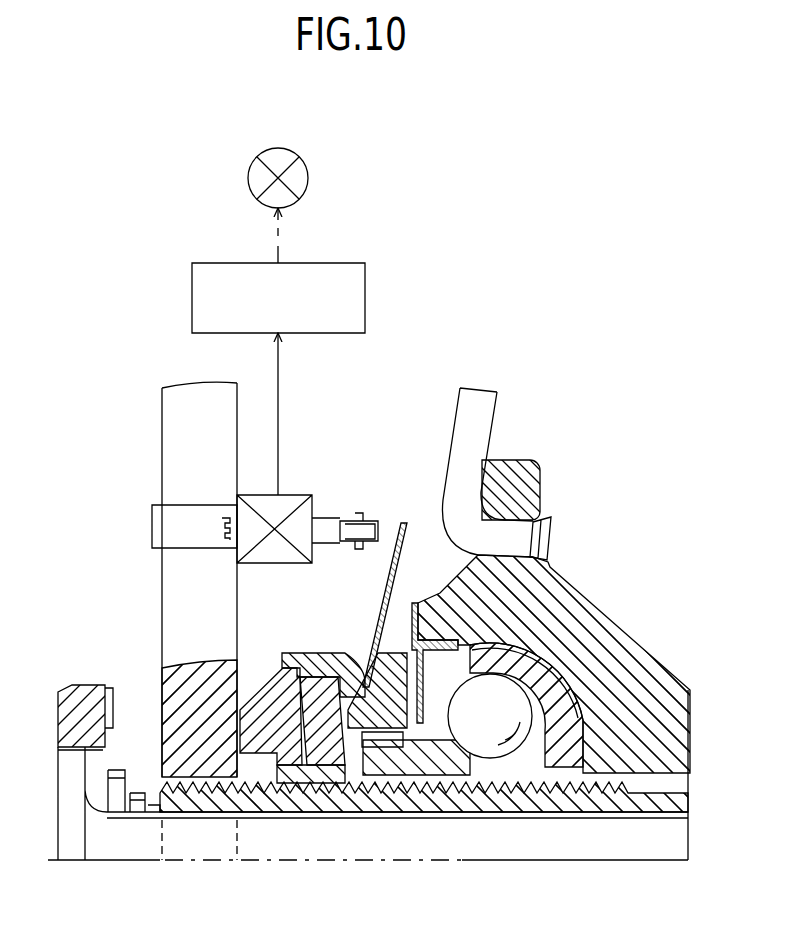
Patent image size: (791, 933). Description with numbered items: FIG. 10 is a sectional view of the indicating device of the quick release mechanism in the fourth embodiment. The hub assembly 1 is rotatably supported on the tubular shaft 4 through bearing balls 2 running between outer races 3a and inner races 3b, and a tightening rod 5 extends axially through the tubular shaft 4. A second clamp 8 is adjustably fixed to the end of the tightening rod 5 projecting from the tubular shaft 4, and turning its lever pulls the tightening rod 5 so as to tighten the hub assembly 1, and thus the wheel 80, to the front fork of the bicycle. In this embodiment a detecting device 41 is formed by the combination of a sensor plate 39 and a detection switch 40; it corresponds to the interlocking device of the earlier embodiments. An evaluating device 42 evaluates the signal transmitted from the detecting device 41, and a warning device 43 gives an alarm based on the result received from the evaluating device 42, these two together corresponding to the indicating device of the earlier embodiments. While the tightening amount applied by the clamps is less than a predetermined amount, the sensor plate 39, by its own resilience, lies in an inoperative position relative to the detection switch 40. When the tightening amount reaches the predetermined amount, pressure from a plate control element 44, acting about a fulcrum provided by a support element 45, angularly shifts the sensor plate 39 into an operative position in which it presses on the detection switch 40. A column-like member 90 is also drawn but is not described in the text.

The hub assembly 1 is at (583, 552).
The bearing balls 2 is at (552, 665).
The outer races 3a is at (563, 760).
The inner races 3b is at (468, 778).
The tubular shaft 4 is at (662, 793).
The tightening rod 5 is at (600, 848).
The second clamp 8 is at (87, 683).
The sensor plate 39 is at (401, 522).
The detection switch 40 is at (270, 557).
The detecting device 41 is at (352, 496).
The evaluating device 42 is at (365, 292).
The warning device 43 is at (308, 176).
The plate control element 44 is at (333, 652).
The support element 45 is at (397, 650).
The wheel 80 is at (455, 422).
The column 90 is at (175, 443).